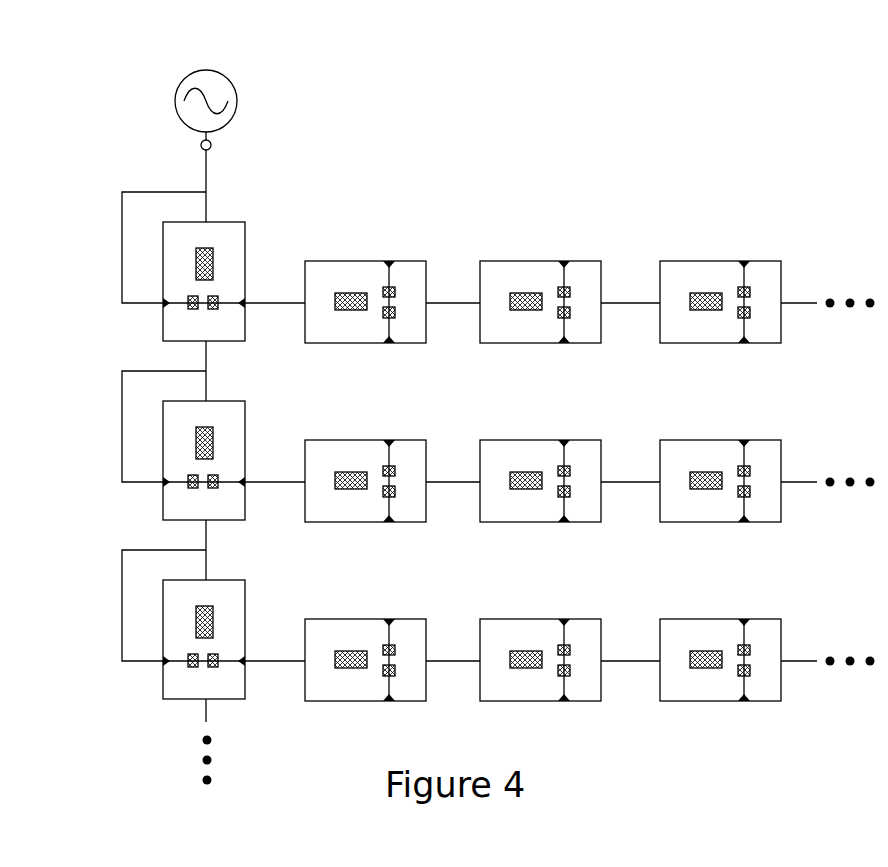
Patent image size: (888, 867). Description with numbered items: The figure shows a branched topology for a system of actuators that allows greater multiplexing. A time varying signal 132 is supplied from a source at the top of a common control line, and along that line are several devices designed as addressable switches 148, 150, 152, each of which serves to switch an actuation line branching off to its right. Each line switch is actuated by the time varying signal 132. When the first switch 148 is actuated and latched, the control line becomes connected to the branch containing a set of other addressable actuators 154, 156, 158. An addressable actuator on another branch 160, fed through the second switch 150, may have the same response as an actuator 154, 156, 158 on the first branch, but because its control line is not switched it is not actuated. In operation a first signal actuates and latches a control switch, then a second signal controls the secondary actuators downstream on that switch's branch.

The time varying signal 132 is at (207, 70).
The addressable switch 148 is at (146, 266).
The addressable switch 150 is at (146, 445).
The addressable switch 152 is at (146, 624).
The addressable actuator 154 is at (365, 273).
The addressable actuator 156 is at (540, 273).
The addressable actuator 158 is at (720, 273).
The addressable actuator on another branch 160 is at (365, 457).